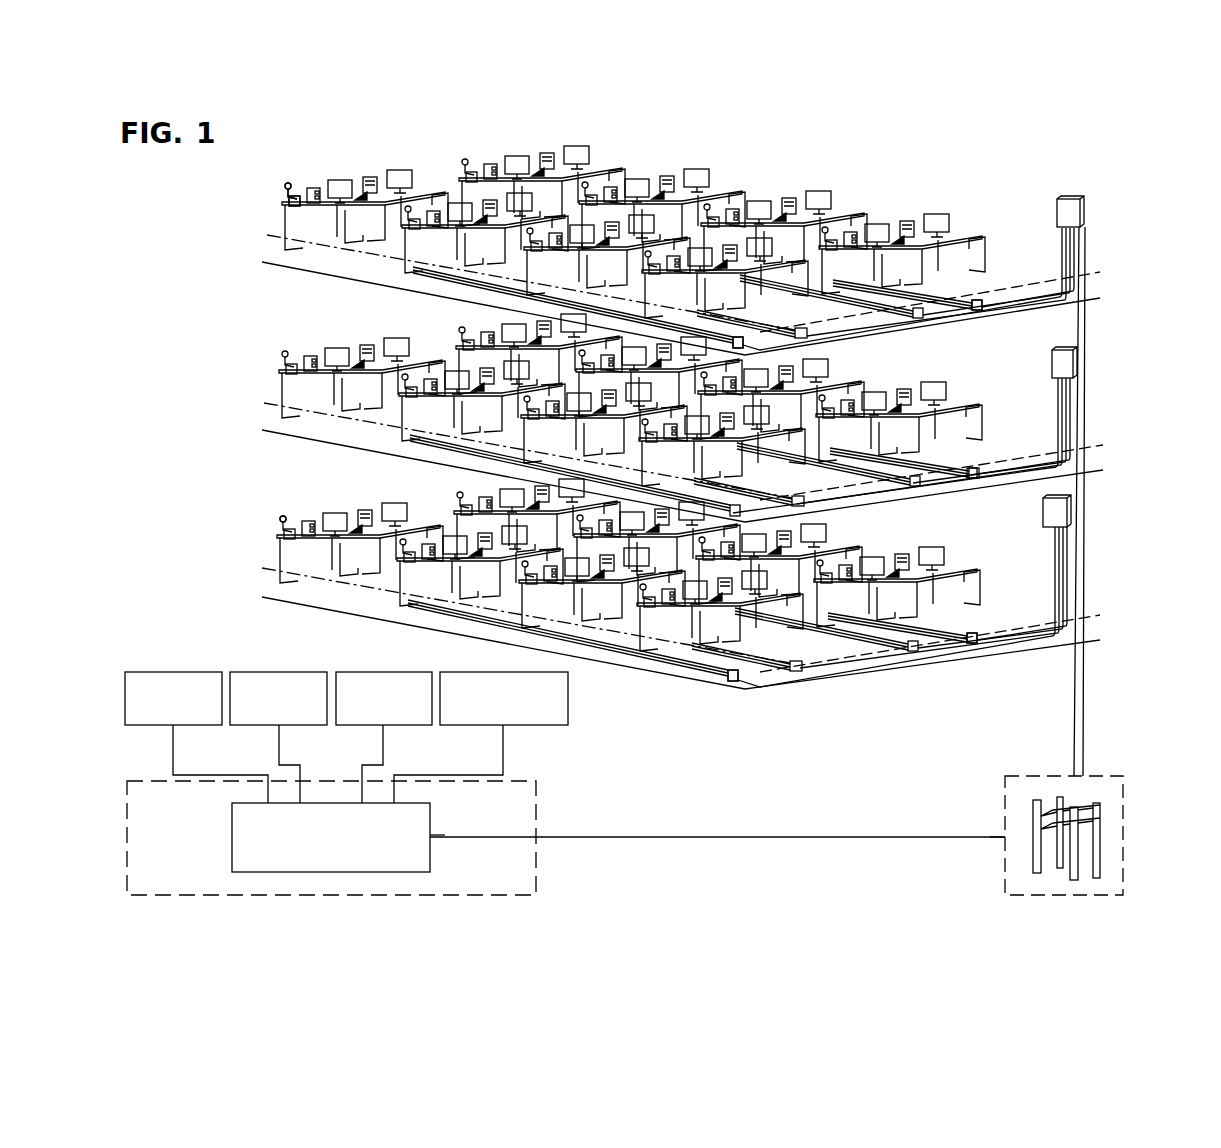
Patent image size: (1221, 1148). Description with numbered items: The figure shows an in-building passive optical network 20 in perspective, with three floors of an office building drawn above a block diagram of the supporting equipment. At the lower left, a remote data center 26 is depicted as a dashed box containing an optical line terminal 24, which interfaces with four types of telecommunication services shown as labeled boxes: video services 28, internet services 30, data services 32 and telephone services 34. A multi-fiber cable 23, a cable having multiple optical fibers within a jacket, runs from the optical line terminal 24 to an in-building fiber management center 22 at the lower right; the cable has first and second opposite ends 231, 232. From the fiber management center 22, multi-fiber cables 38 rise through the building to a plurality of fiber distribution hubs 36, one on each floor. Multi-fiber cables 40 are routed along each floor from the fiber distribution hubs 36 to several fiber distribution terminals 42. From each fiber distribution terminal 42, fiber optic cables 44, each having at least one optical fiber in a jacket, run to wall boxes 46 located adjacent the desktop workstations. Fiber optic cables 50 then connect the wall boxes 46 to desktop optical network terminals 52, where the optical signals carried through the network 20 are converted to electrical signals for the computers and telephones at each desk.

The in-building passive optical network 20 is at (1142, 188).
The in-building fiber management center 22 is at (1126, 799).
The multi-fiber cable 23 is at (772, 834).
The first end of multi-fiber cable 231 is at (432, 836).
The second end of multi-fiber cable 232 is at (1004, 838).
The optical line terminal 24 is at (232, 835).
The remote data center 26 is at (540, 870).
The video services 28 is at (175, 672).
The internet services 30 is at (282, 672).
The data services 32 is at (385, 672).
The telephone services 34 is at (505, 672).
The fiber distribution hub 36 is at (1060, 212).
The multi-fiber cable 38 is at (1084, 700).
The multi-fiber cable 40 is at (808, 343).
The fiber distribution terminal 42 is at (805, 330).
The fiber optic cable 44 is at (320, 268).
The wall box 46 is at (286, 184).
The fiber optic cable 50 is at (296, 194).
The desktop optical network terminal 52 is at (289, 201).